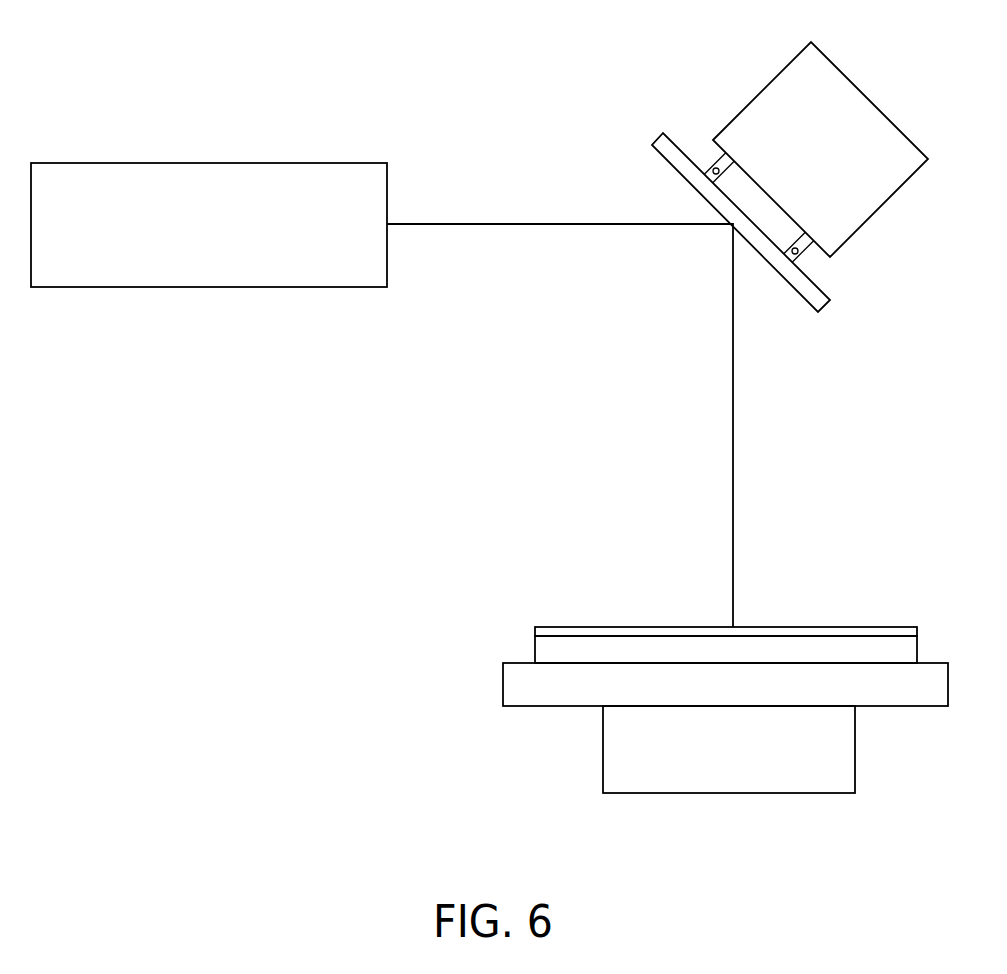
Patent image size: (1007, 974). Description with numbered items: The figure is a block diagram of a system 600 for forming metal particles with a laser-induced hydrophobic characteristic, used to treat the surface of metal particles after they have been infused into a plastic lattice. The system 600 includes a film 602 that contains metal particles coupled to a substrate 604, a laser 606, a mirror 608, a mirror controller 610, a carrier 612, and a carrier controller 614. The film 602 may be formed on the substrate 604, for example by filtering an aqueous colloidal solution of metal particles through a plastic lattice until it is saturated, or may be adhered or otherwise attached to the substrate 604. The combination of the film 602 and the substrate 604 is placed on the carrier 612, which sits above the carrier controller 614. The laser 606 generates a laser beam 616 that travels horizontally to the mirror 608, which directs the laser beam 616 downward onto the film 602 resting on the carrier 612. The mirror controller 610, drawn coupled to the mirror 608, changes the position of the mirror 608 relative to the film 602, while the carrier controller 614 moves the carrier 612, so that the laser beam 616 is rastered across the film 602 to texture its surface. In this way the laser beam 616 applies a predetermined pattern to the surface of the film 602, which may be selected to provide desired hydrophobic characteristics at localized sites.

The system 600 is at (131, 88).
The film 602 is at (615, 627).
The substrate 604 is at (547, 650).
The laser 606 is at (269, 239).
The mirror 608 is at (803, 300).
The mirror controller 610 is at (843, 192).
The carrier 612 is at (792, 697).
The carrier controller 614 is at (752, 777).
The laser beam 616 is at (625, 224).